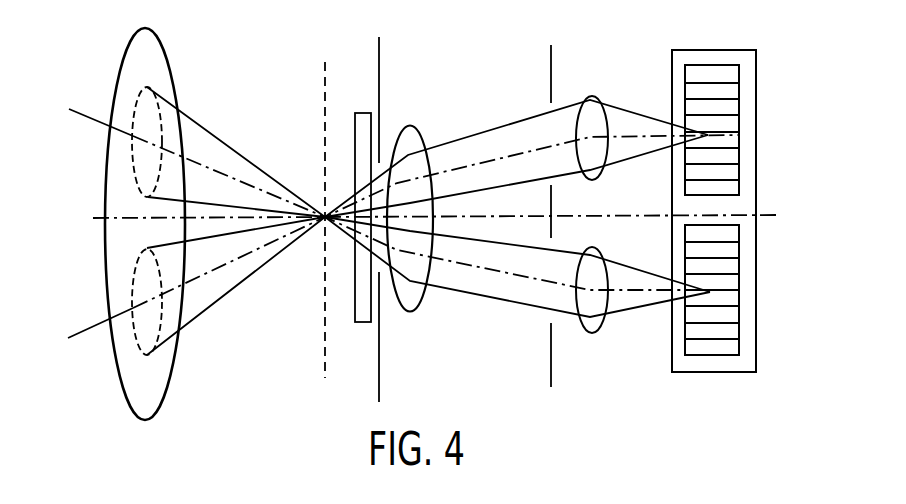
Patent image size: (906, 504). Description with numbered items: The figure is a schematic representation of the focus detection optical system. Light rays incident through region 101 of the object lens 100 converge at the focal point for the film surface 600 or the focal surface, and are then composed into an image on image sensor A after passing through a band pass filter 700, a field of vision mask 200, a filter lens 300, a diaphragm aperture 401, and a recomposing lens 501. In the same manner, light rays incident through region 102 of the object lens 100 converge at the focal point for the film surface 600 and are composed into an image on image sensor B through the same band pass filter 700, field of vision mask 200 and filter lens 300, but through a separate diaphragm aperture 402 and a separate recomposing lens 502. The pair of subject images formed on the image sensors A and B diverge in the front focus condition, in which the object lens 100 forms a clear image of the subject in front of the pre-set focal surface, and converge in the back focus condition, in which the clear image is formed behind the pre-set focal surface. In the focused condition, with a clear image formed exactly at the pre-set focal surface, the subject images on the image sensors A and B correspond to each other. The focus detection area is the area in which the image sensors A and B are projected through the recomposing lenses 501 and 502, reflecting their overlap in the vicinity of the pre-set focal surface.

The object lens 100 is at (148, 30).
The region of the object lens 101 is at (162, 318).
The region of the object lens 102 is at (163, 97).
The film surface 600 is at (323, 62).
The band pass filter 700 is at (358, 113).
The field of vision mask 200 is at (379, 50).
The filter lens 300 is at (410, 125).
The diaphragm aperture 401 is at (548, 110).
The diaphragm aperture 402 is at (553, 315).
The recomposing lens 501 is at (590, 97).
The recomposing lens 502 is at (631, 365).
The image sensor A is at (754, 123).
The image sensor B is at (755, 286).